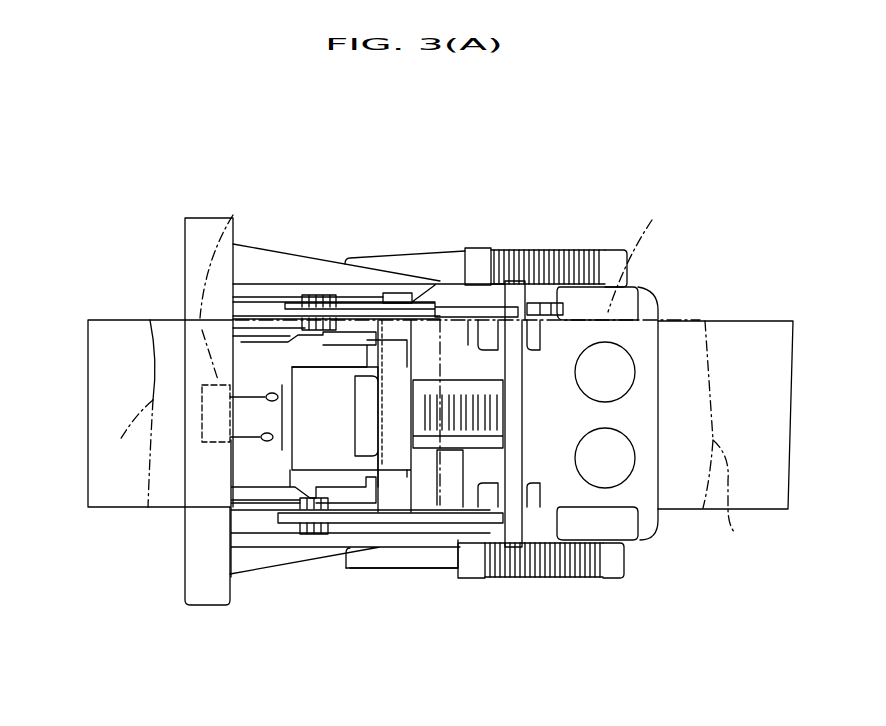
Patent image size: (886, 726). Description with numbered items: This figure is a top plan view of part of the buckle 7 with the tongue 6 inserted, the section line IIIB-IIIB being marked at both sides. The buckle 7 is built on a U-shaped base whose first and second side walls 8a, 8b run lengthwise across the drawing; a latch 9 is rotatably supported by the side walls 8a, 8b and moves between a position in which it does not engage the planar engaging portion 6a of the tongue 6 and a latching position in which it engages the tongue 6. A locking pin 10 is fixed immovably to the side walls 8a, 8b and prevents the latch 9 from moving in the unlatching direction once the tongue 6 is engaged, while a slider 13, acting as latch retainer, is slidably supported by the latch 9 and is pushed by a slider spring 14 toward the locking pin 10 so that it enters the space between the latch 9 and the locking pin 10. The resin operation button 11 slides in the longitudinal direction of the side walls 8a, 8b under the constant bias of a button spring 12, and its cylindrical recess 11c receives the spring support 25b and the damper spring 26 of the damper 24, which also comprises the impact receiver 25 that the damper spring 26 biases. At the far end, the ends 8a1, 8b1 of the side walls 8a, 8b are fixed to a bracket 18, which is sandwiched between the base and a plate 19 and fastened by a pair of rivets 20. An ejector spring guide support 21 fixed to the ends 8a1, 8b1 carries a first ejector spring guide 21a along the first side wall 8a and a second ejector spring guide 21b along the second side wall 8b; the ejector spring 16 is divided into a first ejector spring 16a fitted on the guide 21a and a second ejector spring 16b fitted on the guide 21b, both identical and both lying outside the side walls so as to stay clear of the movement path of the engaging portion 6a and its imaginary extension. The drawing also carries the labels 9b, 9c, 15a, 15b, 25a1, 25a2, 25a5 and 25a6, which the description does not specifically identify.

The tongue 6 is at (116, 310).
The planar engaging portion 6a is at (118, 497).
The buckle 7 is at (380, 147).
The first side wall 8a is at (363, 513).
The end of first side wall 8a1 is at (540, 550).
The second side wall 8b is at (370, 312).
The end of second side wall 8b1 is at (548, 315).
The latch 9 is at (355, 420).
The lower shaft end 9b is at (507, 540).
The upper shaft end 9c is at (515, 290).
The locking pin 10 is at (398, 375).
The operation button 11 is at (185, 245).
The recess 11c is at (240, 397).
The button spring 12 is at (318, 323).
The slider 13 is at (433, 335).
The slider spring 14 is at (480, 435).
The lower nut 15a is at (462, 565).
The upper nut 15b is at (478, 255).
The ejector spring 16 is at (552, 240).
The first ejector spring 16a is at (545, 579).
The second ejector spring 16b is at (590, 250).
The bracket 18 is at (760, 330).
The plate 19 is at (650, 385).
The rivets 20 is at (614, 382).
The ejector spring guide support 21 is at (642, 283).
The first ejector spring guide 21a is at (415, 565).
The second ejector spring guide 21b is at (427, 265).
The damper 24 is at (238, 648).
The impact receiver 25 is at (262, 472).
The adjuster portion 25a1 is at (343, 518).
The adjuster portion 25a2 is at (347, 353).
The adjuster portion 25a5 is at (292, 512).
The adjuster portion 25a6 is at (307, 350).
The spring support 25b is at (253, 397).
The damper spring 26 is at (198, 560).